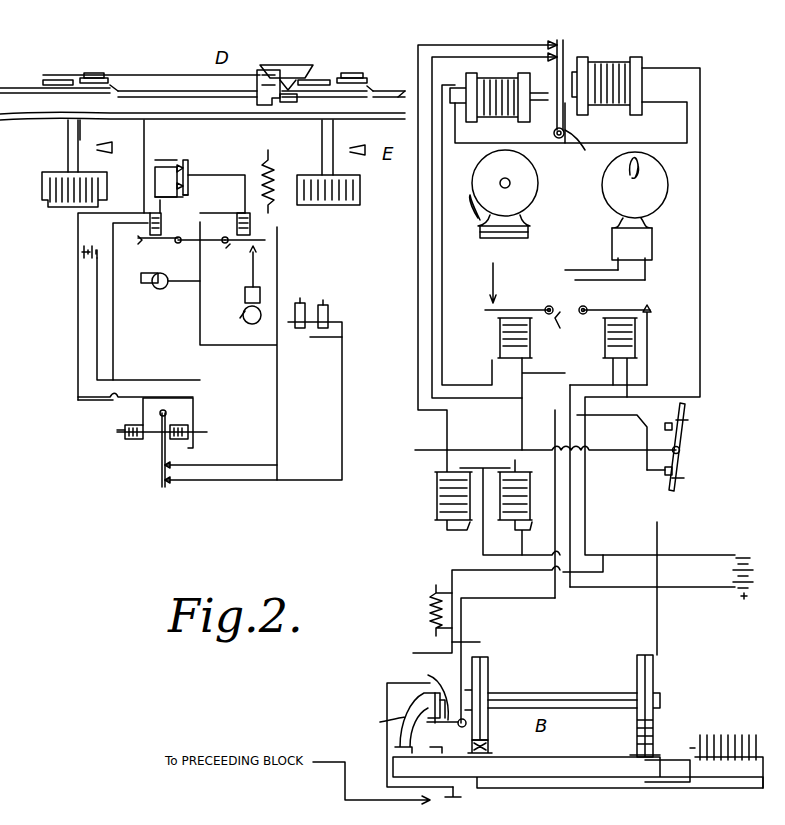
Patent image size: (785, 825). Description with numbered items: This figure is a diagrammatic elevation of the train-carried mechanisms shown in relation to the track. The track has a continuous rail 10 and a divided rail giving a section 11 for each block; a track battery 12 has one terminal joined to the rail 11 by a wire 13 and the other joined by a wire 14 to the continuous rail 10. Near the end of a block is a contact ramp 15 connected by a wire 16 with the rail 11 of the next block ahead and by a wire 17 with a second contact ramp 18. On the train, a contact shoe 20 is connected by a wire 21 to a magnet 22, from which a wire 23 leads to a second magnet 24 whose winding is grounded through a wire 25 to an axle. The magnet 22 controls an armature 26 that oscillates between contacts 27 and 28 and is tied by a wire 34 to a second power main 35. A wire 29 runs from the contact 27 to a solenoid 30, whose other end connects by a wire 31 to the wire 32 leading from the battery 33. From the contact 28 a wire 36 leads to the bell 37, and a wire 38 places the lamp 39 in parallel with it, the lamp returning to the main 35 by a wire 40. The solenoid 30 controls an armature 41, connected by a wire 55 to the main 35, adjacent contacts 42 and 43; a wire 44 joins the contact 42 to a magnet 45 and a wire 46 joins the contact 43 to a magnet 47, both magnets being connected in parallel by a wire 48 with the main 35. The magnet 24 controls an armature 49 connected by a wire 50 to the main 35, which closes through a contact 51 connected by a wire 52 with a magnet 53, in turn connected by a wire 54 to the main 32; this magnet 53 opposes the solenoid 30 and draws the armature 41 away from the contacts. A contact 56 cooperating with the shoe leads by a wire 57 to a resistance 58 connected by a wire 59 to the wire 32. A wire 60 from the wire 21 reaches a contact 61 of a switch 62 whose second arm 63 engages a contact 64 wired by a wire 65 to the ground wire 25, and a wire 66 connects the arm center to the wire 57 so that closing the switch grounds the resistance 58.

The continuous rail 10 is at (640, 748).
The rail section 11 is at (232, 96).
The track battery 12 is at (45, 203).
The wire 13 is at (695, 778).
The wire 14 is at (66, 146).
The contact ramp 15 is at (56, 79).
The wire 16 is at (116, 89).
The wire 17 is at (175, 75).
The second contact ramp 18 is at (98, 77).
The contact shoe 20 is at (292, 70).
The wire 21 is at (245, 172).
The magnet 22 is at (250, 222).
The wire 23 is at (200, 213).
The second magnet 24 is at (156, 244).
The wire 25 is at (148, 150).
The armature 26 is at (520, 302).
The contact 27 is at (262, 240).
The contact 28 is at (257, 250).
The wire 29 is at (277, 378).
The solenoid 30 is at (190, 434).
The wire 31 is at (196, 412).
The wire 32 is at (85, 398).
The battery 33 is at (82, 258).
The wire 34 is at (230, 246).
The second power main 35 is at (95, 322).
The wire 36 is at (252, 275).
The bell 37 is at (262, 295).
The wire 38 is at (236, 290).
The lamp 39 is at (168, 285).
The wire 40 is at (141, 278).
The armature 41 is at (160, 468).
The contact 42 is at (180, 470).
The contact 43 is at (170, 485).
The wire 44 is at (340, 392).
The magnet 45 is at (305, 305).
The wire 46 is at (272, 480).
The magnet 47 is at (330, 312).
The wire 48 is at (342, 338).
The armature 49 is at (170, 242).
The wire 50 is at (582, 302).
The contact 51 is at (140, 240).
The wire 52 is at (113, 360).
The magnet 53 is at (625, 62).
The wire 54 is at (117, 432).
The wire 55 is at (170, 397).
The contact 56 is at (268, 68).
The wire 57 is at (284, 104).
The resistance 58 is at (276, 190).
The wire 59 is at (118, 212).
The wire 60 is at (160, 170).
The contact 61 is at (173, 166).
The switch 62 is at (188, 168).
The second arm 63 is at (682, 462).
The contact 64 is at (178, 197).
The wire 65 is at (645, 470).
The wire 66 is at (490, 450).